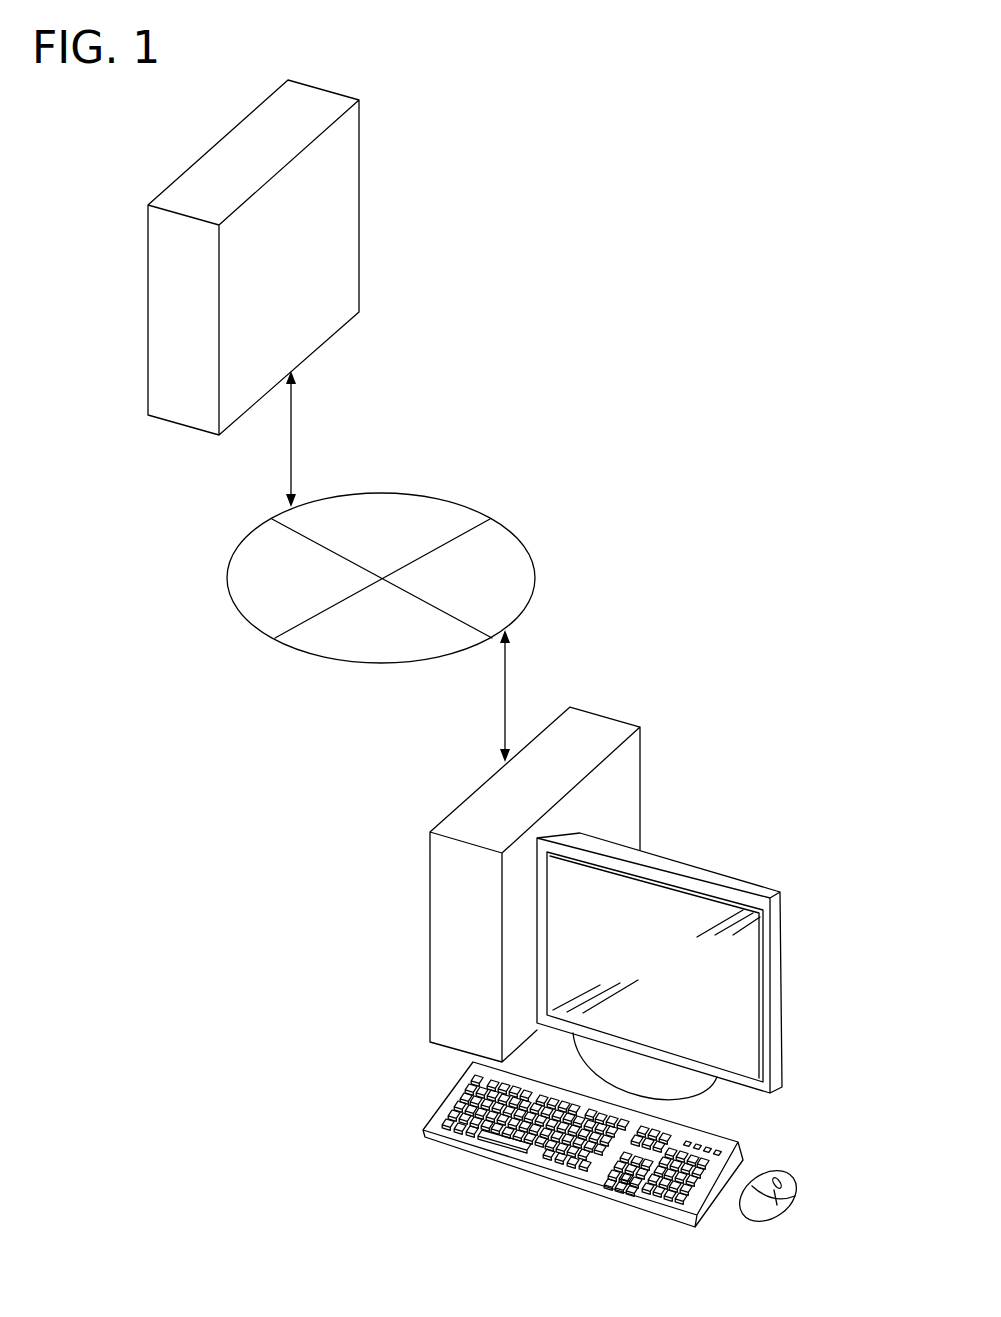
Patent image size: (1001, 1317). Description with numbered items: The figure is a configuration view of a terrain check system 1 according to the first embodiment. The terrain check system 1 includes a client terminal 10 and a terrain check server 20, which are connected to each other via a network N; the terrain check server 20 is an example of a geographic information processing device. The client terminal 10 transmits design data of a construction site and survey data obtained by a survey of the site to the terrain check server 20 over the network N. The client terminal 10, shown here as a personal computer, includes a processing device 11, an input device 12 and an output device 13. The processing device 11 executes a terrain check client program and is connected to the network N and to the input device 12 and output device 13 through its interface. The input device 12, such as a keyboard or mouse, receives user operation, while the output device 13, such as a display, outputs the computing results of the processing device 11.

The terrain check system 1 is at (668, 233).
The terrain check server 20 is at (148, 316).
The network N is at (450, 501).
The client terminal 10 is at (754, 771).
The processing device 11 is at (430, 940).
The input device 12 is at (567, 1188).
The output device 13 is at (730, 877).